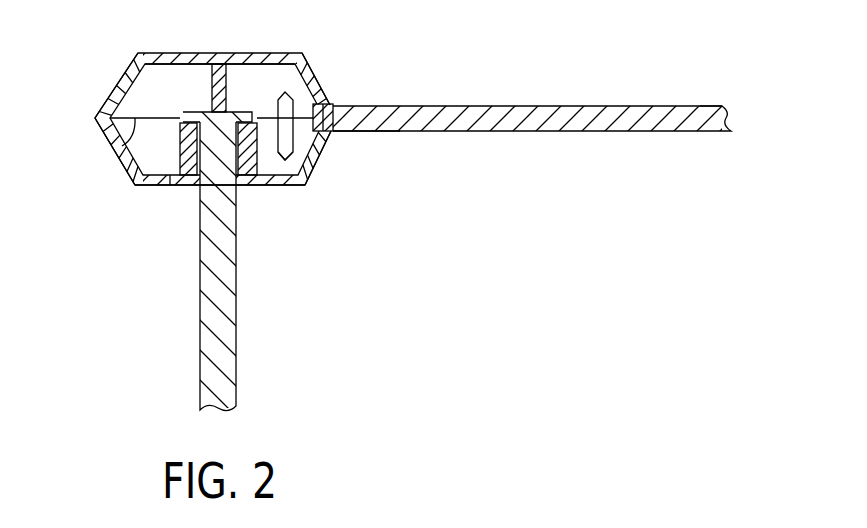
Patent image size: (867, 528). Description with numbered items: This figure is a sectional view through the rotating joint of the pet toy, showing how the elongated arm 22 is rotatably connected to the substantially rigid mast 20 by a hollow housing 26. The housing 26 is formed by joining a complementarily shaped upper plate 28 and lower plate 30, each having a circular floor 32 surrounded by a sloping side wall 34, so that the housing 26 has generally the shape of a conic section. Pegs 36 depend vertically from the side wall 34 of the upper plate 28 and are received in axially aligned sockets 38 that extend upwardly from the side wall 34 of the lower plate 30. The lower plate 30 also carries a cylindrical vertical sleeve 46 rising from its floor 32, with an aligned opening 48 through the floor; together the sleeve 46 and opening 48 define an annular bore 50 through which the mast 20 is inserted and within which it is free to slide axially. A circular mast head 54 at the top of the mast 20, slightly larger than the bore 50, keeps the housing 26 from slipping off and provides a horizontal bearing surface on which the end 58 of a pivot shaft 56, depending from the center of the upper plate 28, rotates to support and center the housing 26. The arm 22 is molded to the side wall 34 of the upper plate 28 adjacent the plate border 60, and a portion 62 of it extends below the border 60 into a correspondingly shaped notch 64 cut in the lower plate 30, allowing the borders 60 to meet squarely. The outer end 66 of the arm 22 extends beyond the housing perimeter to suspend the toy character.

The mast 20 is at (228, 366).
The arm 22 is at (522, 107).
The housing 26 is at (322, 62).
The upper plate 28 is at (138, 87).
The lower plate 30 is at (290, 166).
The floor 32 is at (278, 53).
The side wall 34 is at (113, 102).
The pegs 36 is at (297, 102).
The socket 38 is at (300, 142).
The sleeve 46 is at (188, 182).
The opening 48 is at (253, 190).
The annular bore 50 is at (178, 187).
The mast head 54 is at (195, 111).
The pivot shaft 56 is at (207, 68).
The end of pivot shaft 58 is at (230, 105).
The plate border 60 is at (116, 149).
The portion of arm 62 is at (335, 107).
The notch 64 is at (333, 134).
The outer end of arm 66 is at (712, 95).